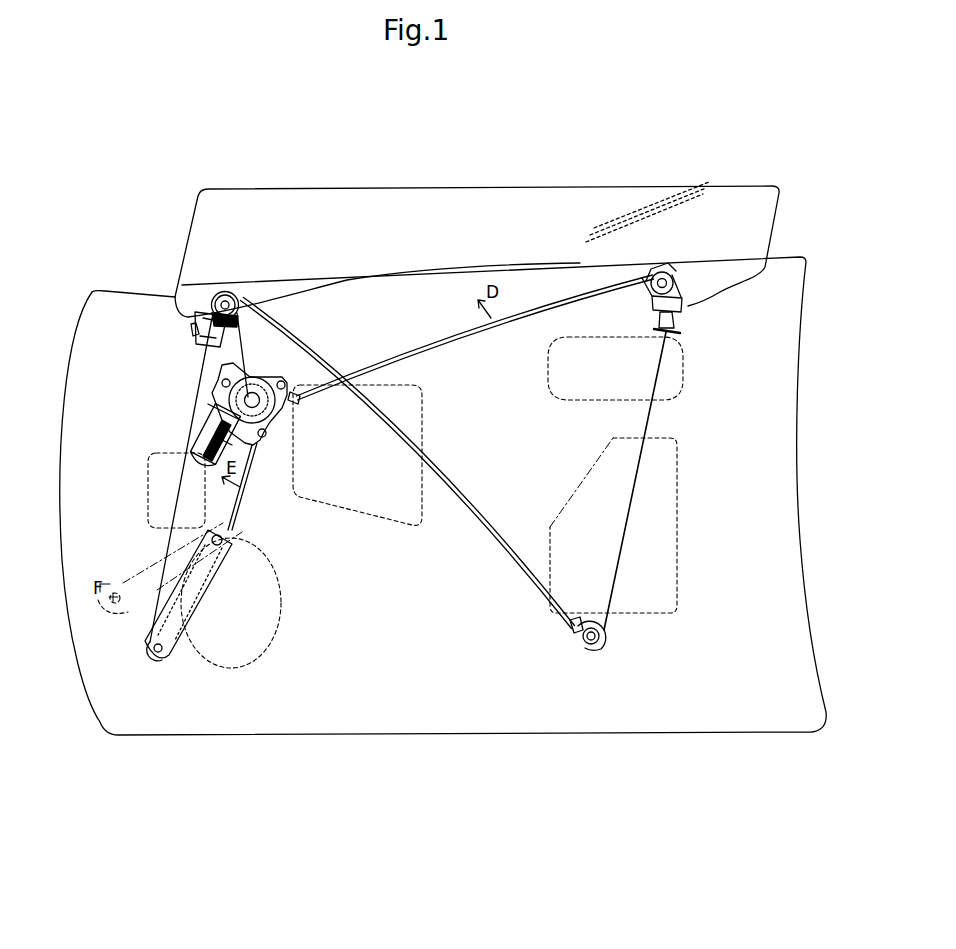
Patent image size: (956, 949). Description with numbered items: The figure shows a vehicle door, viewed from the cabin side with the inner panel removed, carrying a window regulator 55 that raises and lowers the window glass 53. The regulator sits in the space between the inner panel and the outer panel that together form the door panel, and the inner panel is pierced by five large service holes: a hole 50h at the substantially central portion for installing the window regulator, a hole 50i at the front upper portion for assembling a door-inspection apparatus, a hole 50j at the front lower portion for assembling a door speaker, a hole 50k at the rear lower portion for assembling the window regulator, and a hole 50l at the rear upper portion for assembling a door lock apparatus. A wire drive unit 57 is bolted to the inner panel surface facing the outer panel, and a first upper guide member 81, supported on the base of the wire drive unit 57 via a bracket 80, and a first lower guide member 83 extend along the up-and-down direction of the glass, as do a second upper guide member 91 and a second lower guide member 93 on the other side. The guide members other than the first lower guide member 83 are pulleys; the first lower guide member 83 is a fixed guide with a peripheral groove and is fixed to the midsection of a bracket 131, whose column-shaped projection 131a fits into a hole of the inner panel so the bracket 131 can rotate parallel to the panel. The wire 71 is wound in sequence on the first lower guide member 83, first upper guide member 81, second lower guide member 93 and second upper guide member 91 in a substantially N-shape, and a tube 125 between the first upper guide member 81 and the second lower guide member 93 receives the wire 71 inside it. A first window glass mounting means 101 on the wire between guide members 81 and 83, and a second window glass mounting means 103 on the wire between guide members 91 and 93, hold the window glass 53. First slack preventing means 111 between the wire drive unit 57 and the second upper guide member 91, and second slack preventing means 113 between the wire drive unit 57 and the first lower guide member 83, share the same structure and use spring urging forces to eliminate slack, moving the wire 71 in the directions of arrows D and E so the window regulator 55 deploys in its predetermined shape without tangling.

The window glass 53 is at (208, 218).
The window regulator 55 is at (437, 550).
The wire drive unit 57 is at (288, 368).
The wire 71 is at (660, 363).
The bracket 80 is at (197, 338).
The first upper guide member 81 is at (216, 300).
The first lower guide member 83 is at (163, 670).
The second upper guide member 91 is at (662, 272).
The second lower guide member 93 is at (587, 657).
The first window glass mounting means 101 is at (193, 326).
The second window glass mounting means 103 is at (687, 305).
The first slack preventing means 111 is at (513, 304).
The second slack preventing means 113 is at (256, 520).
The tube 125 is at (508, 552).
The bracket 131 is at (203, 620).
The column-shaped projection 131a is at (210, 542).
The hole 50h is at (433, 416).
The hole 50i is at (142, 467).
The hole 50j is at (273, 573).
The hole 50k is at (685, 462).
The hole 50l is at (680, 384).